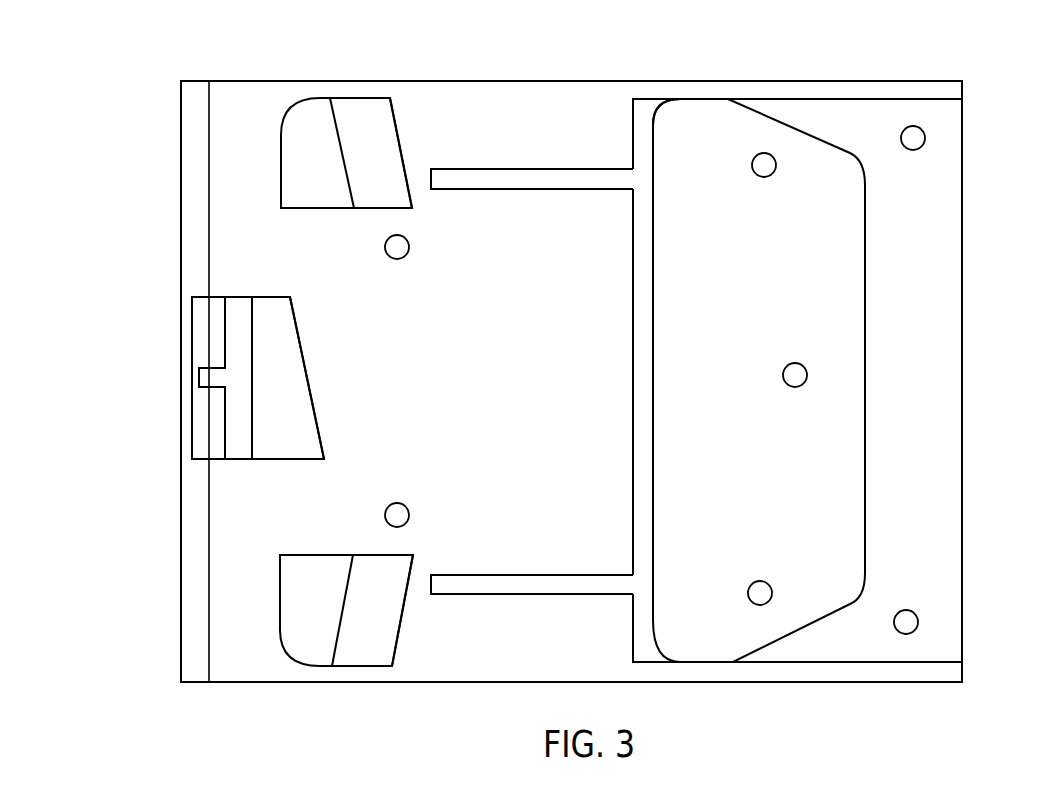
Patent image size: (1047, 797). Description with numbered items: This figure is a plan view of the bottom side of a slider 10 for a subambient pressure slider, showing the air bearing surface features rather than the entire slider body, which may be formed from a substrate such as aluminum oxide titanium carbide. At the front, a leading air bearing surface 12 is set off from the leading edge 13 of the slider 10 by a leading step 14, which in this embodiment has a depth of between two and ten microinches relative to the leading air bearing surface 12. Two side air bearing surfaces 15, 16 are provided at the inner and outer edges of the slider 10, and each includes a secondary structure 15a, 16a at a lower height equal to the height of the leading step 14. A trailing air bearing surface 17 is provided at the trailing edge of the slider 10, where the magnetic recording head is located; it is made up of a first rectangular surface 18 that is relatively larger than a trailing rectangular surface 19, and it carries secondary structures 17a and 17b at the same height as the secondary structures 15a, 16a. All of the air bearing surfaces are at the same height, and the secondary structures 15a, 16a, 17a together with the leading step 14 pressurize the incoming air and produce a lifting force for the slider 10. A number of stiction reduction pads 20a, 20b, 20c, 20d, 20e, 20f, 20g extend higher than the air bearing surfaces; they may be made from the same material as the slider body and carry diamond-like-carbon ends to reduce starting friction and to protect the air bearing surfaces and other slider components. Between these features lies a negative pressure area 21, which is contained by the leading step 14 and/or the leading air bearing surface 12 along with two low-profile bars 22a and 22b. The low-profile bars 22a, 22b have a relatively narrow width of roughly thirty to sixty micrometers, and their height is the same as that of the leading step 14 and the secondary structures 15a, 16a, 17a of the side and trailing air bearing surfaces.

The slider 10 is at (301, 75).
The leading air bearing surface 12 is at (705, 108).
The leading edge 13 is at (972, 137).
The leading step 14 is at (820, 108).
The side air bearing surface 15 is at (322, 203).
The secondary structure 15a is at (400, 128).
The side air bearing surface 16 is at (333, 562).
The secondary structure 16a is at (403, 617).
The trailing air bearing surface 17 is at (237, 297).
The secondary structure 17a is at (293, 347).
The secondary structure 17b is at (209, 378).
The first rectangular surface 18 is at (237, 455).
The trailing rectangular surface 19 is at (218, 376).
The stiction reduction pad 20a is at (913, 150).
The stiction reduction pad 20b is at (906, 609).
The stiction reduction pad 20c is at (764, 177).
The stiction reduction pad 20d is at (800, 387).
The stiction reduction pad 20e is at (760, 580).
The stiction reduction pad 20f is at (409, 250).
The stiction reduction pad 20g is at (399, 503).
The negative pressure area 21 is at (523, 377).
The low-profile bar 22a is at (505, 169).
The low-profile bar 22b is at (508, 575).